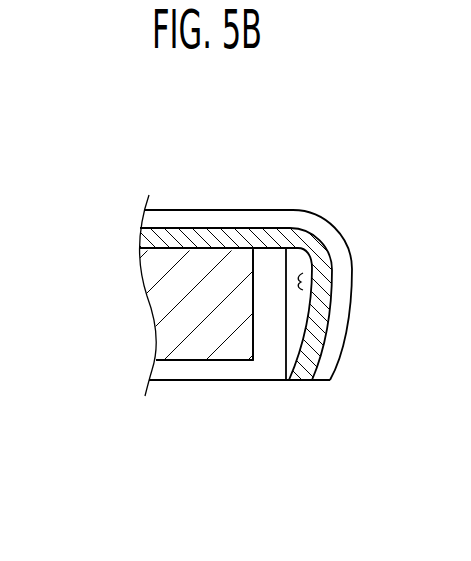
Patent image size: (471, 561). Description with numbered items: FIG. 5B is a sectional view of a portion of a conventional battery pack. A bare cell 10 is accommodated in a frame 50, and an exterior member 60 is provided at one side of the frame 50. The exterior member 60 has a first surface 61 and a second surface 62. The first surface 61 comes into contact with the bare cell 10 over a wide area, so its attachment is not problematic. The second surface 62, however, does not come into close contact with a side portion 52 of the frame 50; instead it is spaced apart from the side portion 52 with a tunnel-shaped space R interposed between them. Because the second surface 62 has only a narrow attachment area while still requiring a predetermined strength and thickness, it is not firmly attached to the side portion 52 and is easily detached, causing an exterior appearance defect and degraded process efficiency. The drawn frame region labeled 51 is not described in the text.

The bare cell 10 is at (166, 299).
The frame 50 is at (239, 382).
The bottom plate 51 is at (189, 372).
The side portion 52 is at (268, 296).
The exterior member 60 is at (246, 239).
The first surface 61 is at (292, 217).
The second surface 62 is at (292, 137).
The tunnel-shaped space R is at (304, 278).